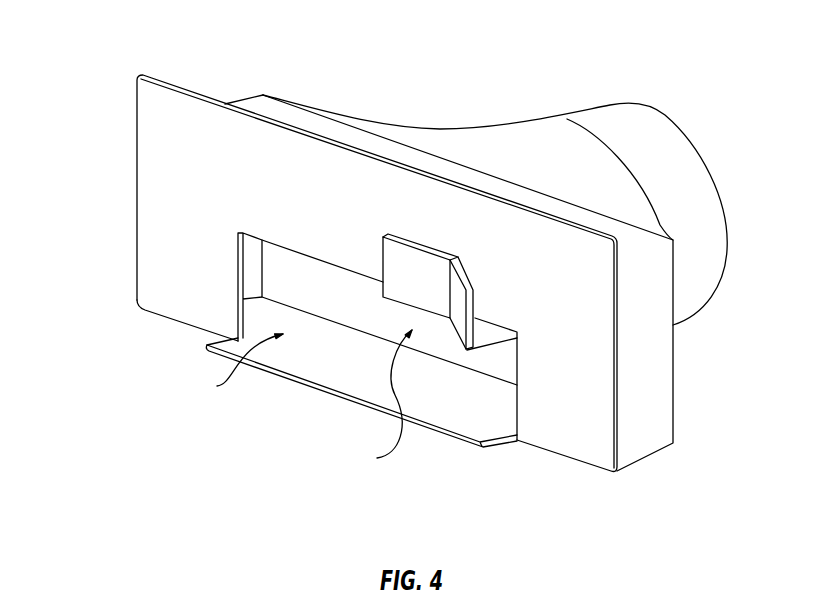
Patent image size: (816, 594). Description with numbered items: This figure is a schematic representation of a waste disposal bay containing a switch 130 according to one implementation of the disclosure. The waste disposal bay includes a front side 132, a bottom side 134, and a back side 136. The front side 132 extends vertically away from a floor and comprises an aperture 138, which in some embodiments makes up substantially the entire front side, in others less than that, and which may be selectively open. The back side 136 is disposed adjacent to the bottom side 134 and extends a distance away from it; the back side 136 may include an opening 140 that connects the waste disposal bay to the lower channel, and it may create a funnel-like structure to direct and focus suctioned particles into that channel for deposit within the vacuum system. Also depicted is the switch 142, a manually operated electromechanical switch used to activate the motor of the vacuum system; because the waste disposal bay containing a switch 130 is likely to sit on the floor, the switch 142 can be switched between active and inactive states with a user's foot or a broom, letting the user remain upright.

The waste disposal bay containing a switch 130 is at (145, 35).
The front side 132 is at (150, 200).
The bottom side 134 is at (337, 373).
The back side 136 is at (260, 267).
The aperture 138 is at (234, 365).
The opening 140 is at (377, 401).
The switch 142 is at (400, 263).